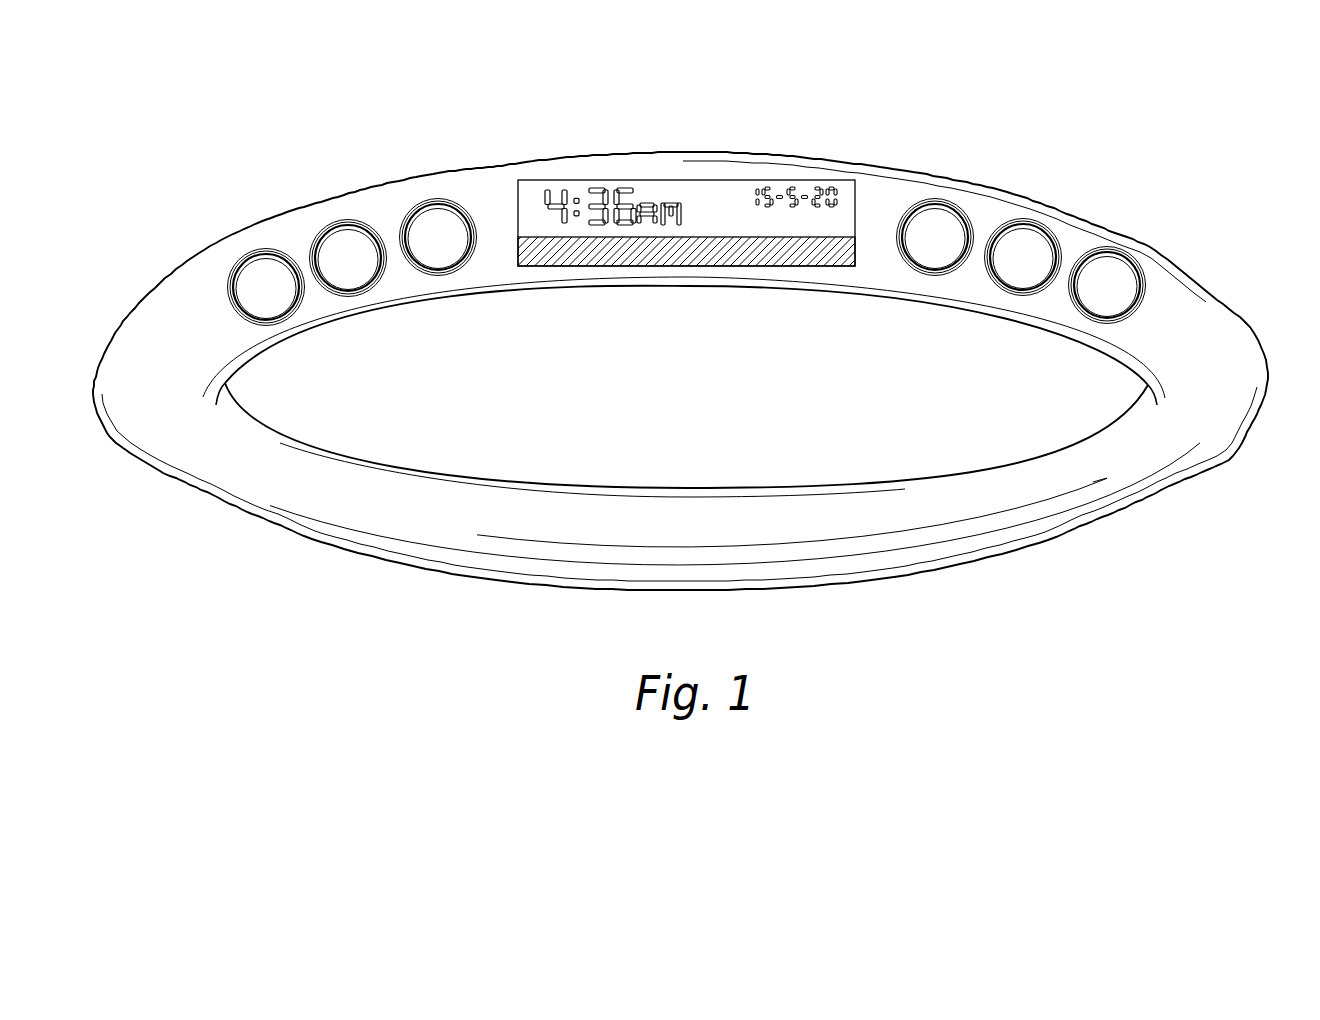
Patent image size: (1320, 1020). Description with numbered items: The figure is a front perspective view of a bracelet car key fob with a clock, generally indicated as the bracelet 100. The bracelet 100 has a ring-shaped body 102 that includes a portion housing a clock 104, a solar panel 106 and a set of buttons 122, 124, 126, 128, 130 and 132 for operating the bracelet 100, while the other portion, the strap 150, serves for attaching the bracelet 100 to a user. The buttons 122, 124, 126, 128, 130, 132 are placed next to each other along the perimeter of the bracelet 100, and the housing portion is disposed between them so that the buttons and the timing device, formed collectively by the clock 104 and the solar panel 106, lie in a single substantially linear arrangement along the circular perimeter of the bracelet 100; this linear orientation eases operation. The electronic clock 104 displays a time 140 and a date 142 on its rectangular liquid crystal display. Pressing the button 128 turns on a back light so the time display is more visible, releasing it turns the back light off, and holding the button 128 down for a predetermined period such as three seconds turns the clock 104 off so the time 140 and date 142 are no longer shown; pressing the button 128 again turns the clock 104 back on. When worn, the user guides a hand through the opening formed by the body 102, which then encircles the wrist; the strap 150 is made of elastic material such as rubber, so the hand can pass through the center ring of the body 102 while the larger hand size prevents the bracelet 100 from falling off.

The bracelet 100 is at (1186, 58).
The body 102 is at (1205, 343).
The clock 104 is at (714, 190).
The solar panel 106 is at (719, 257).
The button 122 is at (935, 237).
The button 124 is at (1033, 243).
The button 126 is at (1110, 273).
The button 128 is at (438, 237).
The button 130 is at (340, 245).
The button 132 is at (263, 273).
The time 140 is at (590, 190).
The date 142 is at (789, 190).
The strap 150 is at (885, 543).